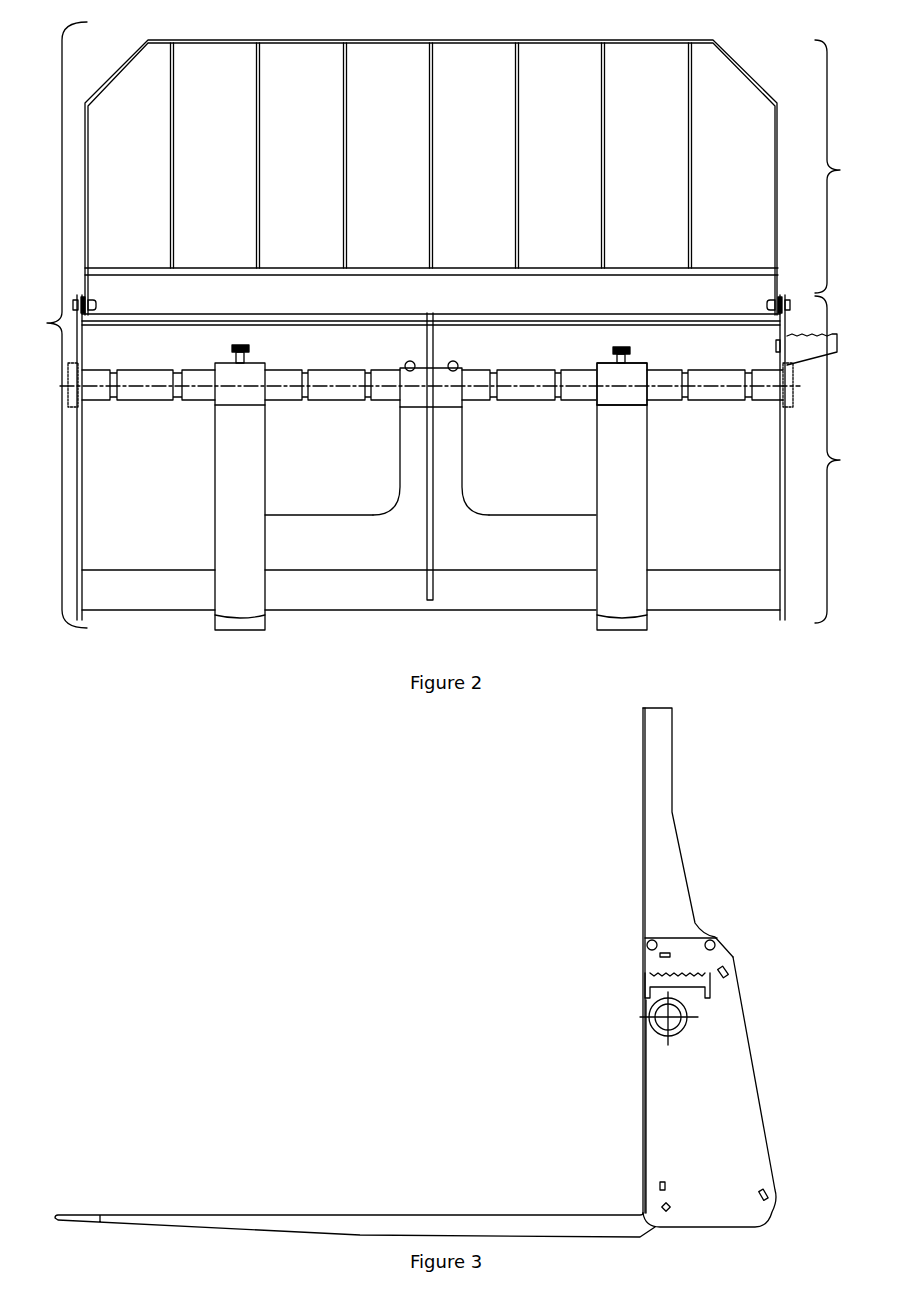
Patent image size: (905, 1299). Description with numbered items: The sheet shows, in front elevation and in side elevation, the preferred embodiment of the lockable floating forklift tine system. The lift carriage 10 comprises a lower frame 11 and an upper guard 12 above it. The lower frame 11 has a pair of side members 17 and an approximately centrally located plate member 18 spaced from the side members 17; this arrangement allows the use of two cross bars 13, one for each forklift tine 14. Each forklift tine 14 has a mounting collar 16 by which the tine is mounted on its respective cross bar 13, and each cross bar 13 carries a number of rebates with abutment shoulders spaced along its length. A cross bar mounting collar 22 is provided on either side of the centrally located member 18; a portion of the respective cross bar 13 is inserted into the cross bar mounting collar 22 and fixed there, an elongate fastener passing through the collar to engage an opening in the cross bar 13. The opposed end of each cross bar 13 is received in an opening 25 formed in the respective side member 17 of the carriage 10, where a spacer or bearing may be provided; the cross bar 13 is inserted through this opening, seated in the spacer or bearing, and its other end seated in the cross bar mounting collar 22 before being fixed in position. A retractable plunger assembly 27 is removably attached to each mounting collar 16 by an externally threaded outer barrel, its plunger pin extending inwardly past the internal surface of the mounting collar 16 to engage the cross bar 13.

In FIG. 2, the lift carriage 10 is at (54, 325).
In FIG. 2, the lower frame 11 is at (461, 459).
In FIG. 3, the lower frame 11 is at (612, 1155).
In FIG. 2, the upper guard 12 is at (464, 177).
In FIG. 3, the upper guard 12 is at (621, 847).
In FIG. 2, the cross bar 13 is at (157, 397).
In FIG. 2, the forklift tine 14 is at (219, 653).
In FIG. 3, the forklift tine 14 is at (261, 1196).
In FIG. 2, the mounting collar 16 is at (635, 368).
In FIG. 3, the side member 17 is at (665, 1117).
In FIG. 2, the centrally located member 18 is at (425, 497).
In FIG. 2, the cross bar mounting collar 22 is at (415, 400).
In FIG. 3, the opening 25 is at (650, 1010).
In FIG. 2, the retractable plunger assembly 27 is at (621, 347).